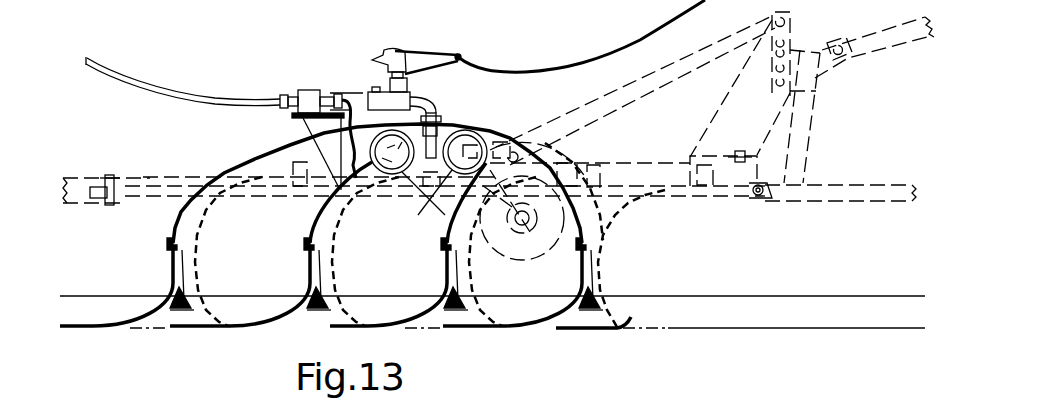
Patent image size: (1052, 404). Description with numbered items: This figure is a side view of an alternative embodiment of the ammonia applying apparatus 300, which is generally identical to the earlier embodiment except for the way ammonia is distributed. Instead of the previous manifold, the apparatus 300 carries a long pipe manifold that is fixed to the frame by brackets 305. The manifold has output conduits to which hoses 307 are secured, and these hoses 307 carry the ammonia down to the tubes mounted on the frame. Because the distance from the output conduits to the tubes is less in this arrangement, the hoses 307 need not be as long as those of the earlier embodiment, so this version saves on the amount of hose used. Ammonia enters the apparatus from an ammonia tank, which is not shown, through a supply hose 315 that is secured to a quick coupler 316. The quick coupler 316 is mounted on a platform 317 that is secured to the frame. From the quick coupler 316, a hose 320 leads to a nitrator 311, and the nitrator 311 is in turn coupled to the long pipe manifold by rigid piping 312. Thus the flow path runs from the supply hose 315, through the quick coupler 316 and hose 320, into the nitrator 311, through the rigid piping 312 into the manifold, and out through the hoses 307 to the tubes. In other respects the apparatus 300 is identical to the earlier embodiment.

The apparatus 300 is at (490, 60).
The brackets 305 is at (450, 132).
The hoses 307 is at (228, 165).
The nitrator 311 is at (402, 98).
The rigid piping 312 is at (427, 104).
The hose 315 is at (193, 90).
The quick coupler 316 is at (305, 92).
The platform 317 is at (296, 124).
The hose 320 is at (368, 93).